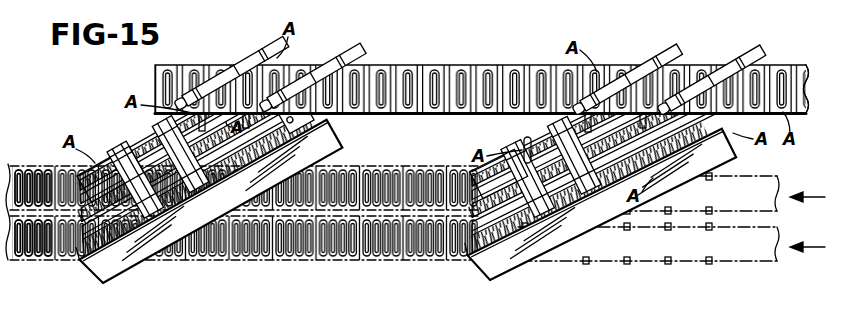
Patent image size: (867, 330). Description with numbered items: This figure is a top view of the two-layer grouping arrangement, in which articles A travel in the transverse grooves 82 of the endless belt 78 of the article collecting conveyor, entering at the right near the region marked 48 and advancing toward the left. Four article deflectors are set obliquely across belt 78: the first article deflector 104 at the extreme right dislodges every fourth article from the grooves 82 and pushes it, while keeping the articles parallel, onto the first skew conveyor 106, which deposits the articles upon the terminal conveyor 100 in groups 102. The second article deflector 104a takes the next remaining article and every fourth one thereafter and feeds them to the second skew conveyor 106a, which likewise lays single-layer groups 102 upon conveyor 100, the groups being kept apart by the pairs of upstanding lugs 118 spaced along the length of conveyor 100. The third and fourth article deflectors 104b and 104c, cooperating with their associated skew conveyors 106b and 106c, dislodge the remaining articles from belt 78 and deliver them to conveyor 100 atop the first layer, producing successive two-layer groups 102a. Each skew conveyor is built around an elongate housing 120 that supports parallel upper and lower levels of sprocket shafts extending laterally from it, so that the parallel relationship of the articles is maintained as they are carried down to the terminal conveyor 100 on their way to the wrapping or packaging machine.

The conveyor end / direction arrow 48 is at (790, 66).
The endless belt 78 is at (493, 67).
The transverse grooves 82 is at (547, 72).
The terminal conveyor 100 is at (745, 265).
The groups of articles 102 is at (325, 260).
The two-layer groups 102a is at (47, 165).
The article deflector 104 is at (735, 63).
The second article deflector 104a is at (638, 65).
The third article deflector 104b is at (335, 58).
The fourth article deflector 104c is at (240, 62).
The skew conveyor 106 is at (174, 236).
The second skew conveyor 106a is at (532, 137).
The third skew conveyor 106b is at (300, 143).
The fourth skew conveyor 106c is at (125, 153).
The upstanding lugs 118 is at (380, 260).
The elongate housing 120 is at (118, 263).